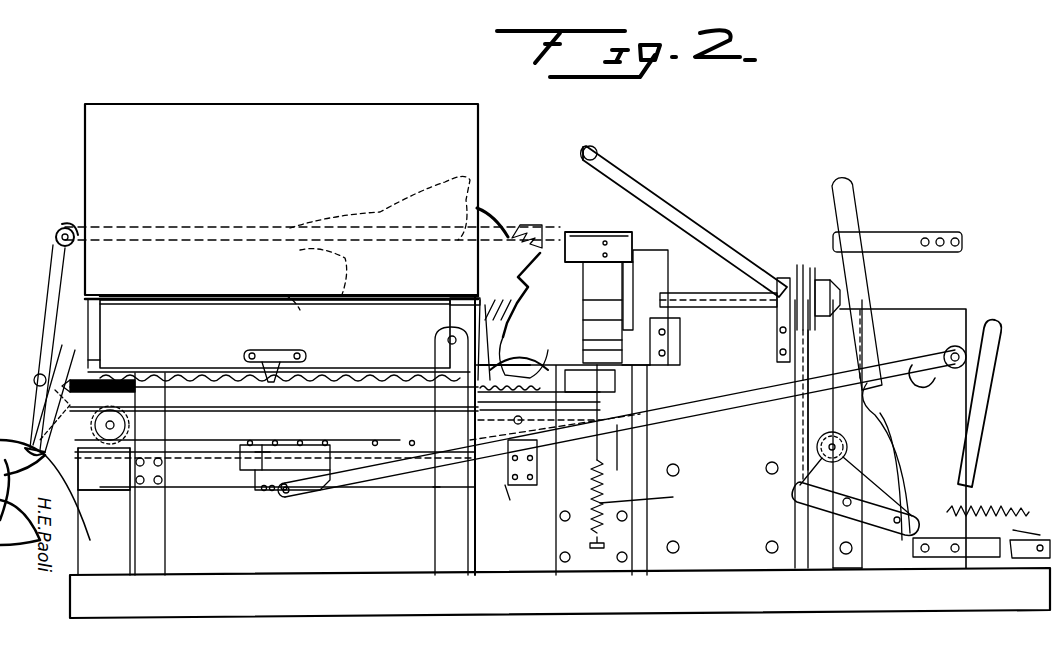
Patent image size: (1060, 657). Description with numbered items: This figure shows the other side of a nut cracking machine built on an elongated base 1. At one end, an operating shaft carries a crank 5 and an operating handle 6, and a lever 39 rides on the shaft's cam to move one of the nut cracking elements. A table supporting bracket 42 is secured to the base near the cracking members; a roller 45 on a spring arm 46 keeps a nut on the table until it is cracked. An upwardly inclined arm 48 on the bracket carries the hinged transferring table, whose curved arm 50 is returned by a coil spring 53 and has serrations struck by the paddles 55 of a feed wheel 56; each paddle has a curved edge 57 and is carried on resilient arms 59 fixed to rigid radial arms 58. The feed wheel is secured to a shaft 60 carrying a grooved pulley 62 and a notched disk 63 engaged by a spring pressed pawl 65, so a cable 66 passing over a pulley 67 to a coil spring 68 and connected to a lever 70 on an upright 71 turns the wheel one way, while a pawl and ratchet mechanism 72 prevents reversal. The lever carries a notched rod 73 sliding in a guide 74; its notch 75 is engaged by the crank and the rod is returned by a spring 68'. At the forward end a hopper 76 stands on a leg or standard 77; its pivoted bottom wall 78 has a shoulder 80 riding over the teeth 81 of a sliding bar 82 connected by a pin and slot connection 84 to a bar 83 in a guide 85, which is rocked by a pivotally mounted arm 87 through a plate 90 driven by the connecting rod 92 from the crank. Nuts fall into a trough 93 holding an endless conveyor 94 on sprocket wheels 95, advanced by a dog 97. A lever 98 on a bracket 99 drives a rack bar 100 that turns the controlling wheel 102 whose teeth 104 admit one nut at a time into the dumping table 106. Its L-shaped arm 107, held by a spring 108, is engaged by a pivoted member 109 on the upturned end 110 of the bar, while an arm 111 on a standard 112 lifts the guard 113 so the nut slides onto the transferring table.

The base 1 is at (560, 576).
The crank 5 is at (942, 375).
The operating handle 6 is at (698, 222).
The lever 39 is at (1000, 358).
The table supporting bracket 42 is at (562, 548).
The roller 45 is at (655, 372).
The spring arm 46 is at (655, 432).
The upwardly inclined arm 48 is at (618, 455).
The curved arm 50 is at (590, 453).
The coil spring 53 is at (640, 496).
The paddles 55 is at (632, 248).
The feed wheel 56 is at (602, 320).
The curved edge 57 is at (505, 488).
The radially extending arms 58 is at (602, 337).
The resilient arms 59 is at (604, 232).
The shaft 60 is at (695, 293).
The grooved pulley 62 is at (795, 275).
The notched disk 63 is at (832, 296).
The spring pressed pawl 65 is at (812, 265).
The cable 66 is at (800, 362).
The pulley 67 is at (800, 494).
The coil spring 68 is at (993, 504).
The spring 68' is at (981, 566).
The lever 70 is at (880, 506).
The upright 71 is at (848, 535).
The pawl and ratchet mechanism 72 is at (680, 312).
The notched rod 73 is at (882, 312).
The guide 74 is at (898, 232).
The notch 75 is at (890, 398).
The hopper 76 is at (281, 201).
The leg or standard 77 is at (128, 298).
The bottom wall 78 is at (269, 334).
The shoulder 80 is at (270, 350).
The teeth 81 is at (303, 368).
The bar 82 is at (137, 365).
The bar 83 is at (85, 505).
The pin and slot connection 84 is at (77, 507).
The guide 85 is at (226, 488).
The pivotally mounted arm 87 is at (300, 446).
The plate 90 is at (268, 485).
The connecting rod 92 is at (732, 416).
The trough 93 is at (270, 395).
The endless conveyor 94 is at (130, 432).
The sprocket wheels 95 is at (120, 469).
The shoulder or dog 97 is at (258, 444).
The lever 98 is at (47, 326).
The bracket 99 is at (58, 395).
The rack bar 100 is at (530, 225).
The controlling wheel 102 is at (485, 206).
The teeth 104 is at (340, 258).
The dumping table 106 is at (500, 440).
The L-shaped arm 107 is at (546, 397).
The spring 108 is at (533, 340).
The pivoted member 109 is at (540, 302).
The upturned end 110 is at (446, 338).
The arm 111 is at (496, 333).
The standard 112 is at (445, 527).
The guard 113 is at (538, 358).